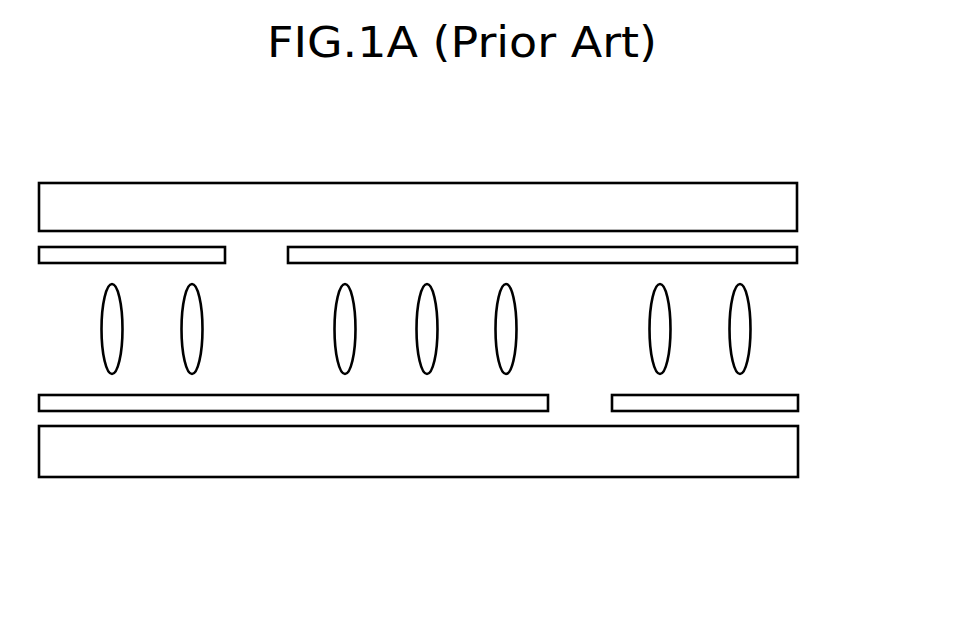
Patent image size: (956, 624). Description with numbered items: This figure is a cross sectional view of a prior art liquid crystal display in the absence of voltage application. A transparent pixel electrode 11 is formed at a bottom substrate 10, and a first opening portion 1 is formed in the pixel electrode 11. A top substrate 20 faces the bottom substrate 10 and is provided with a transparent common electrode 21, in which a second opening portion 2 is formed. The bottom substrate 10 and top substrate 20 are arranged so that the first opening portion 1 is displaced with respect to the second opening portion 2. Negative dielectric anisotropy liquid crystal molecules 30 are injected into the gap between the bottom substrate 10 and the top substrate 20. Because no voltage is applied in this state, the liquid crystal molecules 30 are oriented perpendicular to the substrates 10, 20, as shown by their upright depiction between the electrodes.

The first opening portion 1 is at (582, 395).
The second opening portion 2 is at (258, 262).
The bottom substrate 10 is at (790, 451).
The pixel electrode 11 is at (790, 403).
The top substrate 20 is at (790, 207).
The common electrode 21 is at (790, 255).
The liquid crystal molecules 30 is at (195, 335).